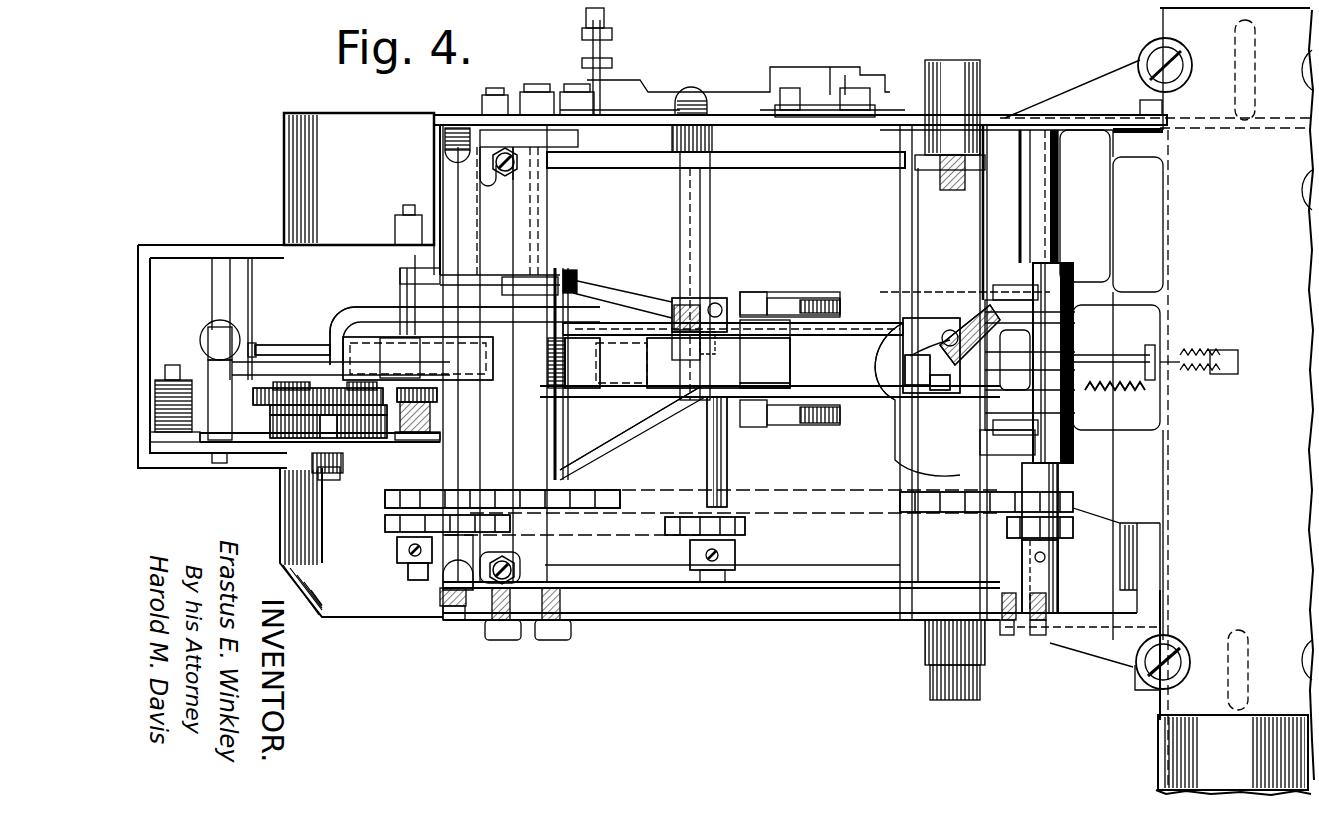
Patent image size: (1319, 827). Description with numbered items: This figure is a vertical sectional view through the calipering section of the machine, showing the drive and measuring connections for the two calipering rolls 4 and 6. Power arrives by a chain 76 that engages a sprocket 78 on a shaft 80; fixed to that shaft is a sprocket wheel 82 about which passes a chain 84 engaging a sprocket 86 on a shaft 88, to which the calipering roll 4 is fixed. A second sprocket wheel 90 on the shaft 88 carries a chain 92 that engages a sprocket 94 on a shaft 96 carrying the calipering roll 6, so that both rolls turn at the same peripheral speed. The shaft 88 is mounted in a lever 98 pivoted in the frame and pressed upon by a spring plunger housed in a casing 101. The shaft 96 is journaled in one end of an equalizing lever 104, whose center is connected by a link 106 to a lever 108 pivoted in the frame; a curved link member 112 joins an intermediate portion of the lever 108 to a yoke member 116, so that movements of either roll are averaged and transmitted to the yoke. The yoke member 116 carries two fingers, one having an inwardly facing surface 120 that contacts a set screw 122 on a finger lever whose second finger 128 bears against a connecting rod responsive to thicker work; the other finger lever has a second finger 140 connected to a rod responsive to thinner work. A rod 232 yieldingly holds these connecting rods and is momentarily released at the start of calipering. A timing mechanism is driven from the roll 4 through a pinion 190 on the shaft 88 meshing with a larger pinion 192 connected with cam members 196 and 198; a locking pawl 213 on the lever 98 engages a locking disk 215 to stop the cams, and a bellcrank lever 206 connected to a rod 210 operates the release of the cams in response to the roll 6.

The calipering roll 4 is at (465, 335).
The calipering roll 6 is at (730, 345).
The chain 76 is at (1068, 538).
The sprocket 78 is at (1024, 540).
The shaft 80 is at (1045, 580).
The sprocket wheel 82 is at (1060, 494).
The chain 84 is at (988, 494).
The sprocket 86 is at (392, 516).
The shaft 88 is at (410, 575).
The second sprocket wheel 90 is at (392, 530).
The chain 92 is at (398, 540).
The sprocket 94 is at (732, 535).
The shaft 96 is at (712, 466).
The lever 98 is at (370, 310).
The casing 101 is at (203, 340).
The equalizing lever 104 is at (635, 430).
The link 106 is at (578, 370).
The lever 108 is at (853, 328).
The curved link member 112 is at (785, 305).
The yoke member 116 is at (895, 350).
The inwardly facing surface 120 is at (920, 332).
The set screw 122 is at (950, 340).
The second finger 128 is at (913, 366).
The second finger 140 is at (935, 385).
The pinion 190 is at (440, 398).
The larger pinion 192 is at (330, 388).
The cam member 196 is at (305, 410).
The cam member 198 is at (318, 420).
The bellcrank lever 206 is at (680, 343).
The rod 210 is at (296, 342).
The locking pawl 213 is at (240, 434).
The locking disk 215 is at (392, 494).
The rod 232 is at (1100, 357).